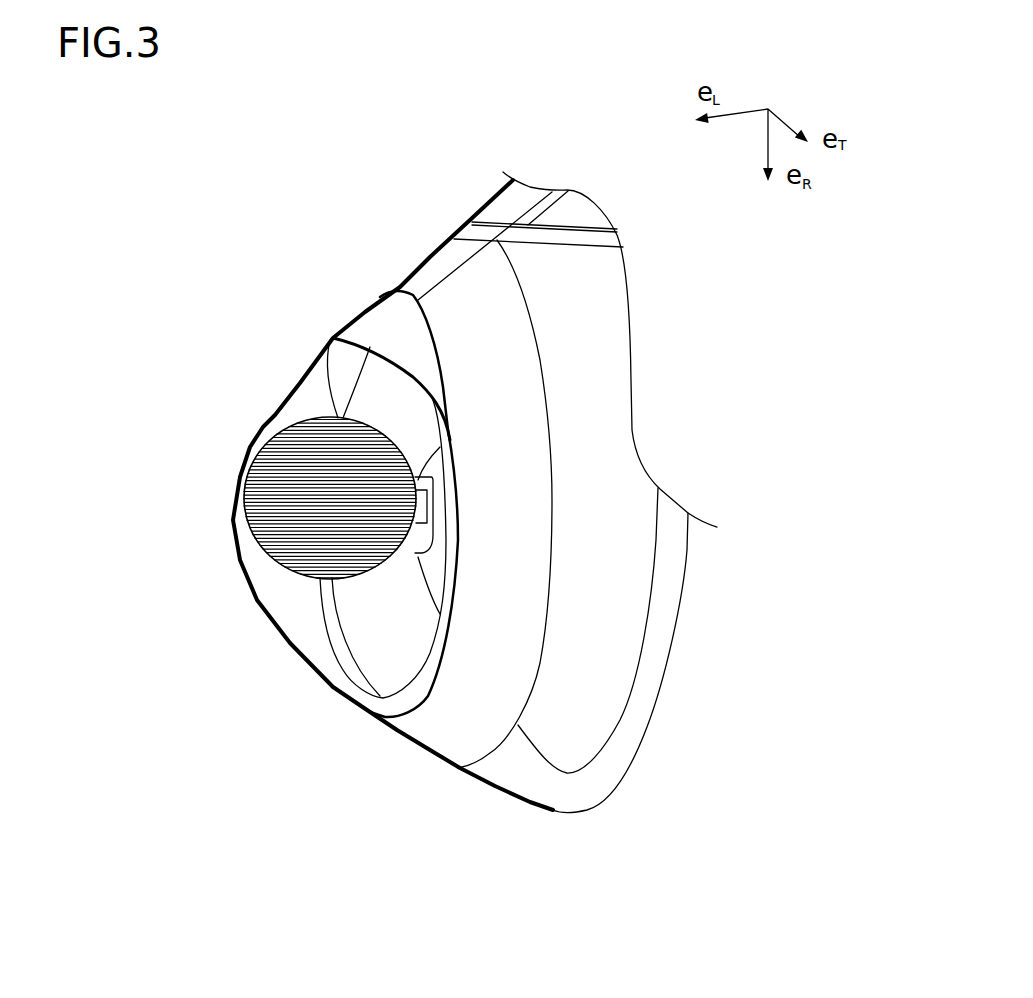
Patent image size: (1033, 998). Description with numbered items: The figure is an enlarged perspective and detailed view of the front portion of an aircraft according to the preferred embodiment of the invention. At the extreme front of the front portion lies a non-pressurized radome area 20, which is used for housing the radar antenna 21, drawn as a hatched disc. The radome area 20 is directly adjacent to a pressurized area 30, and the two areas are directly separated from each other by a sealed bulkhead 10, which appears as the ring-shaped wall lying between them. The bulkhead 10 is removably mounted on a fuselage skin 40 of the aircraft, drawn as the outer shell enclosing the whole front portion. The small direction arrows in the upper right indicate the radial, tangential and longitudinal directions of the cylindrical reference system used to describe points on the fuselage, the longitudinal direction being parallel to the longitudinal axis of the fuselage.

The sealed bulkhead 10 is at (367, 641).
The non-pressurized radome area 20 is at (277, 587).
The radar antenna 21 is at (251, 470).
The pressurized area 30 is at (512, 753).
The fuselage skin 40 is at (505, 792).